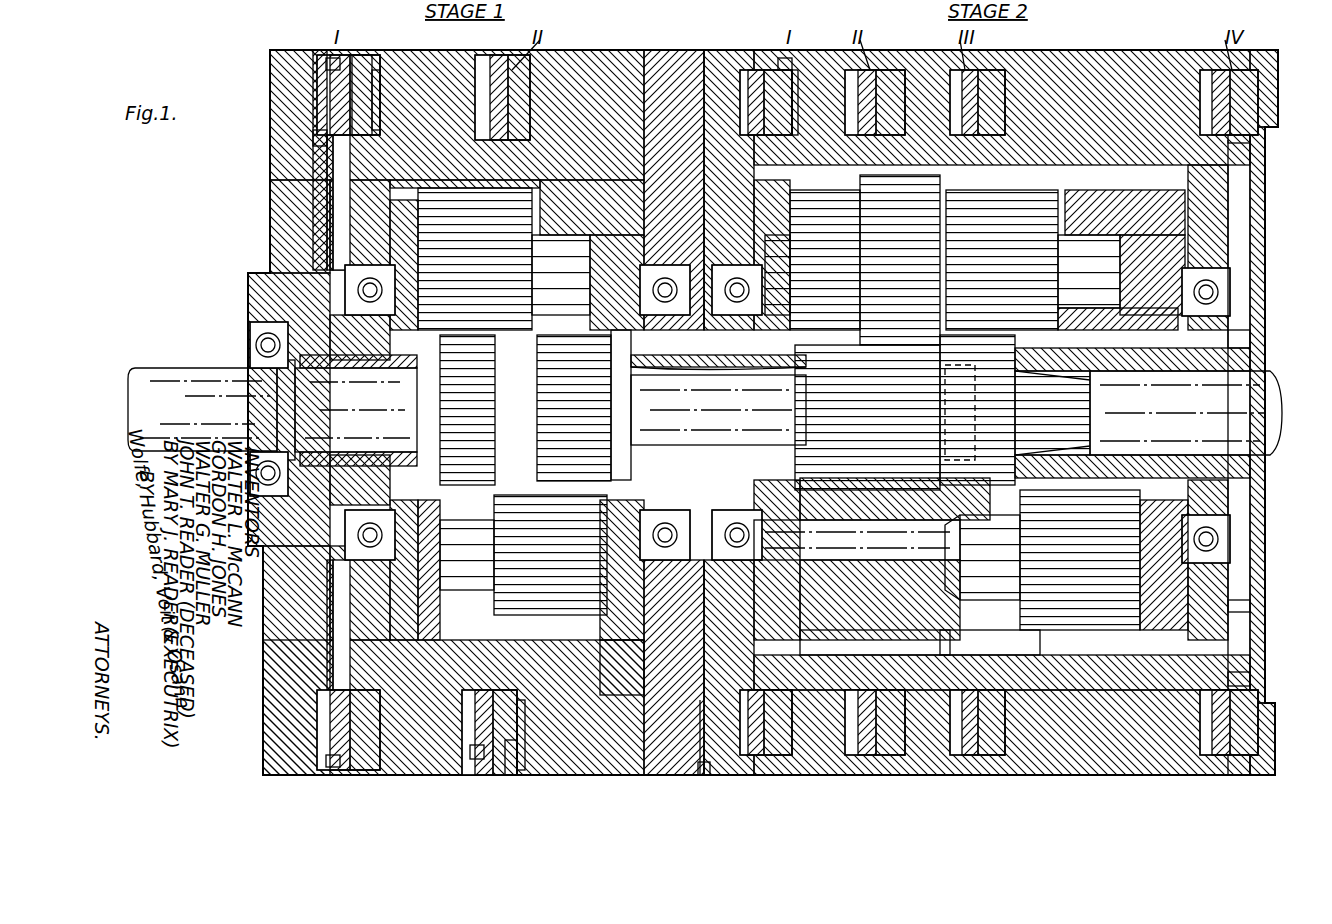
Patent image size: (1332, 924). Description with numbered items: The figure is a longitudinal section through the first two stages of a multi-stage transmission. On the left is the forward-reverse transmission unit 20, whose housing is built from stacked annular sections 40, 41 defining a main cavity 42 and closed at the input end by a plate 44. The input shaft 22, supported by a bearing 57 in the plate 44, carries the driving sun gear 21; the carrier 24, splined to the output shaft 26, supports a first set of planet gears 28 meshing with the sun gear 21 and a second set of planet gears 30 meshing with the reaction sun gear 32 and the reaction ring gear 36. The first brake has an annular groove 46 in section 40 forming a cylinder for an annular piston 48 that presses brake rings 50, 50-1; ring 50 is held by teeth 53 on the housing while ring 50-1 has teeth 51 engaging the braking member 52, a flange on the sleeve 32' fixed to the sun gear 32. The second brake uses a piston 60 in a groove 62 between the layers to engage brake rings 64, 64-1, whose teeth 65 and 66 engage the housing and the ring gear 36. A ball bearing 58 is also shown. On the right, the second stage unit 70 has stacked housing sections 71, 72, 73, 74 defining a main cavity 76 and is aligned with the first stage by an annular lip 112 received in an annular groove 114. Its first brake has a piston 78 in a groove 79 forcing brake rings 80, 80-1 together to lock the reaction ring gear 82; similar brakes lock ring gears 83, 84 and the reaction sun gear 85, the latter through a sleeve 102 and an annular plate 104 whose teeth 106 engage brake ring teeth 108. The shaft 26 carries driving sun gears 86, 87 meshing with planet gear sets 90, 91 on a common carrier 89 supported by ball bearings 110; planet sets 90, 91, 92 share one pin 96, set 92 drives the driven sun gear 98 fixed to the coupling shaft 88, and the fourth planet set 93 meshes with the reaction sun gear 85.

The forward-reverse transmission unit 20 is at (658, 38).
The sun gear 21 is at (540, 455).
The input shaft 22 is at (175, 455).
The carrier 24 is at (672, 343).
The output shaft 26 is at (690, 440).
The first set of planet gears 28 is at (450, 572).
The second set of planet gears 30 is at (525, 264).
The reaction sun gear 32 is at (480, 410).
The sleeve 32' is at (251, 331).
The reaction ring gear 36 is at (425, 185).
The first annular housing section 40 is at (400, 775).
The second annular housing section 41 is at (628, 762).
The main cavity 42 is at (588, 262).
The plate 44 is at (290, 198).
The annular groove 46 is at (372, 70).
The annular piston 48 is at (366, 60).
The brake ring 50 is at (340, 60).
The brake ring 50-1 is at (322, 95).
The teeth 51 is at (314, 134).
The braking member 52 is at (320, 168).
The teeth 53 is at (328, 62).
The bearing 57 is at (258, 470).
The countershaft bearing 58 is at (358, 290).
The annular piston 60 is at (510, 775).
The annular groove 62 is at (517, 760).
The brake ring 64 is at (468, 720).
The brake ring 64-1 is at (480, 770).
The teeth 65 is at (495, 770).
The teeth 66 is at (415, 790).
The second stage unit 70 is at (1098, 42).
The housing section 71 is at (738, 770).
The housing section 72 is at (808, 770).
The housing section 73 is at (906, 770).
The housing section 74 is at (1086, 760).
The main cavity 76 is at (1140, 170).
The annular piston 78 is at (764, 70).
The groove 79 is at (752, 70).
The brake ring 80 is at (795, 70).
The brake ring 80-1 is at (790, 70).
The reaction ring gear 82 is at (875, 636).
The reaction ring gear 83 is at (938, 645).
The reaction ring gear 84 is at (1000, 635).
The reaction sun gear 85 is at (1115, 372).
The driving sun gear 86 is at (828, 500).
The driving sun gear 87 is at (885, 440).
The coupling shaft 88 is at (1270, 395).
The common carrier 89 is at (1250, 318).
The planet gear set 90 is at (810, 215).
The planet gear set 91 is at (900, 260).
The planet gear set 92 is at (1030, 205).
The planet gear set 93 is at (1095, 630).
The pin 96 is at (1135, 268).
The driven sun gear 98 is at (945, 470).
The sleeve 102 is at (1230, 482).
The annular plate 104 is at (1262, 618).
The teeth 106 is at (1258, 682).
The brake ring teeth 108 is at (1258, 138).
The ball bearings 110 is at (1215, 292).
The annular lip 112 is at (700, 772).
The annular groove 114 is at (702, 770).